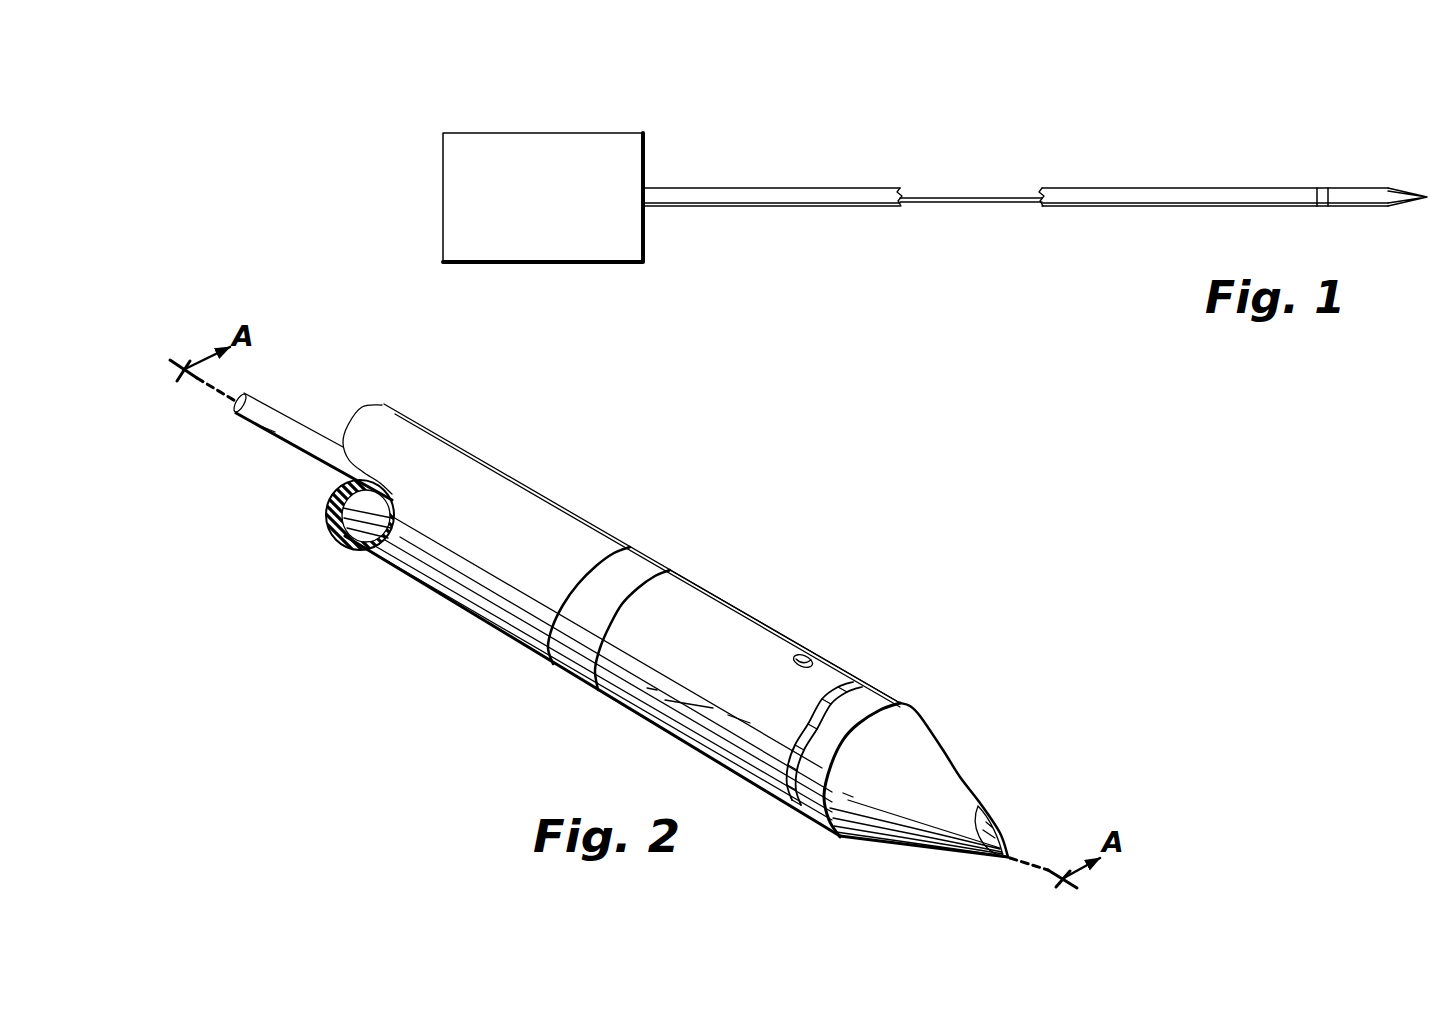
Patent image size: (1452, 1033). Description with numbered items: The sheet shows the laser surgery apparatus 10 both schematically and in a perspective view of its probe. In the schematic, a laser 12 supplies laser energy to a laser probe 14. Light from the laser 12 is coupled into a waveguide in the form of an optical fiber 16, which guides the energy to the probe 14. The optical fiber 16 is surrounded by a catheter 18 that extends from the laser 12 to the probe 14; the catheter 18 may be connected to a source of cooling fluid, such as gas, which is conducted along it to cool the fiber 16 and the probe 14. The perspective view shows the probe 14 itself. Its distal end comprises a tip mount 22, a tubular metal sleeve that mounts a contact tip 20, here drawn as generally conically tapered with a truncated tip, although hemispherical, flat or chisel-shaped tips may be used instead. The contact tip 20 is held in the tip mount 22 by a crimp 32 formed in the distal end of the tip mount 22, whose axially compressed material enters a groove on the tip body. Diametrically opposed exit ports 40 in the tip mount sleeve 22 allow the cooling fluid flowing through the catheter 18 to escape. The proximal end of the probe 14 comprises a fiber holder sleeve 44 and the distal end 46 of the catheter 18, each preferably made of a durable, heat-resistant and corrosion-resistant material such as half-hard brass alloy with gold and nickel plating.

In FIG. 1, the laser surgery apparatus 10 is at (953, 77).
In FIG. 1, the laser 12 is at (591, 132).
In FIG. 1, the laser probe 14 is at (1386, 183).
In FIG. 2, the laser probe 14 is at (973, 612).
In FIG. 1, the optical fiber 16 is at (963, 190).
In FIG. 2, the optical fiber 16 is at (291, 418).
In FIG. 1, the catheter 18 is at (770, 188).
In FIG. 2, the contact tip 20 is at (951, 741).
In FIG. 2, the tip mount 22 is at (728, 610).
In FIG. 2, the crimp 32 is at (854, 679).
In FIG. 2, the exit ports 40 is at (805, 654).
In FIG. 2, the fiber holder sleeve 44 is at (634, 550).
In FIG. 2, the distal end of the catheter 46 is at (540, 508).